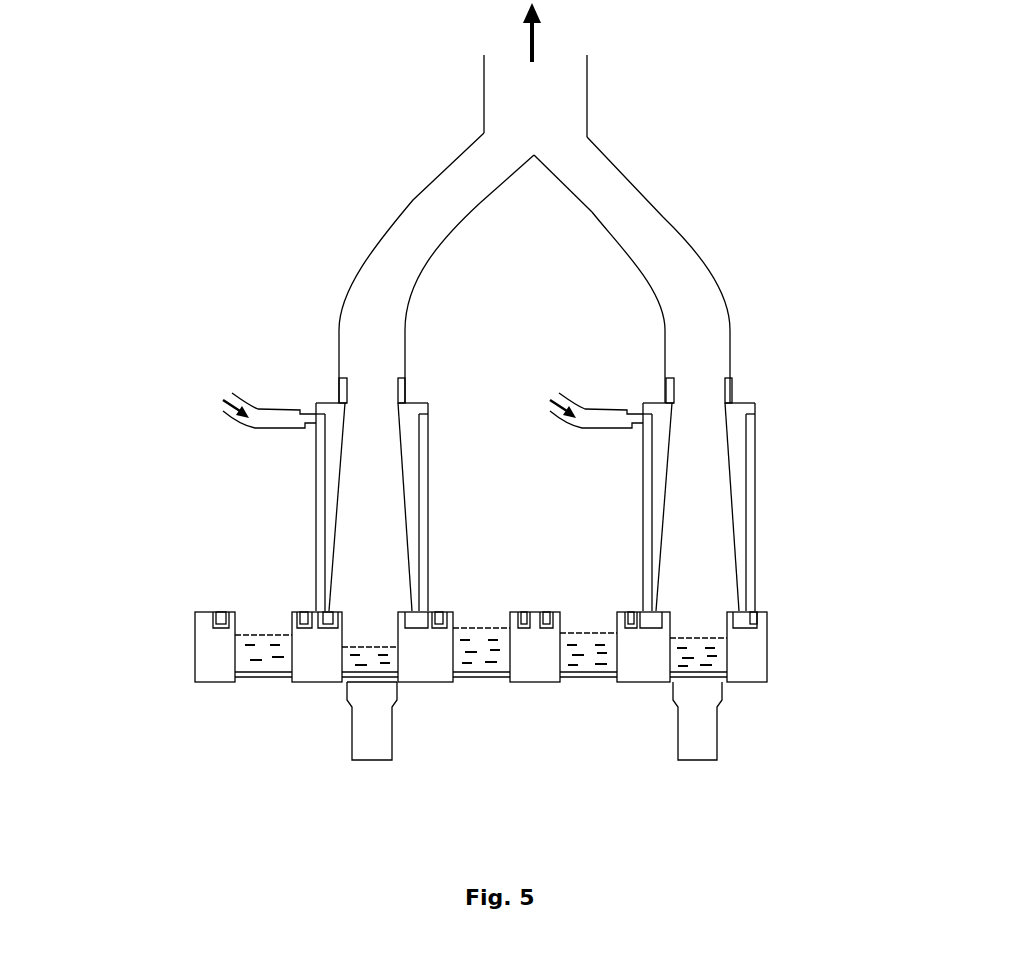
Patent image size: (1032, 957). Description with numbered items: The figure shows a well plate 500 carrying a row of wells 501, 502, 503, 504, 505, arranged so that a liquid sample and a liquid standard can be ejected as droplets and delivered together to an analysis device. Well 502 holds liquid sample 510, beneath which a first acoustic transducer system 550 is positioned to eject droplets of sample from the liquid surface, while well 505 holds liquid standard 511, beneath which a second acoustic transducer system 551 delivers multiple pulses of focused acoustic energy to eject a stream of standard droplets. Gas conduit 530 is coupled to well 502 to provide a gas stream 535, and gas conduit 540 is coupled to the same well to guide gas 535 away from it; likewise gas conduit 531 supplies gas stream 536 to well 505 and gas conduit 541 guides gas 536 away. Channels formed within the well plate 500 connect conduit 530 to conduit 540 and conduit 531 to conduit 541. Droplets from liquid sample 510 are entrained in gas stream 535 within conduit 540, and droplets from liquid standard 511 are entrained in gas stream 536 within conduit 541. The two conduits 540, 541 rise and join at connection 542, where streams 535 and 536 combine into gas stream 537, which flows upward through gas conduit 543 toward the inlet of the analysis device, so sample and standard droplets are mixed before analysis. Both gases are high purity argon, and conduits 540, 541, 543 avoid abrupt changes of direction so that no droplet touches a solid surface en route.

The well plate 500 is at (188, 590).
The well 501 is at (233, 665).
The well 502 is at (342, 663).
The well 503 is at (463, 677).
The well 504 is at (587, 673).
The well 505 is at (665, 673).
The liquid sample 510 is at (367, 657).
The liquid standard 511 is at (713, 662).
The gas conduit 530 is at (327, 528).
The gas conduit 531 is at (612, 507).
The gas stream 535 is at (250, 405).
The gas stream 536 is at (576, 405).
The gas stream 537 is at (533, 45).
The gas conduit 540 is at (347, 420).
The gas conduit 541 is at (704, 327).
The connection point 542 is at (536, 140).
The gas conduit 543 is at (490, 90).
The acoustic transducer system 550 is at (373, 703).
The acoustic transducer system 551 is at (697, 702).